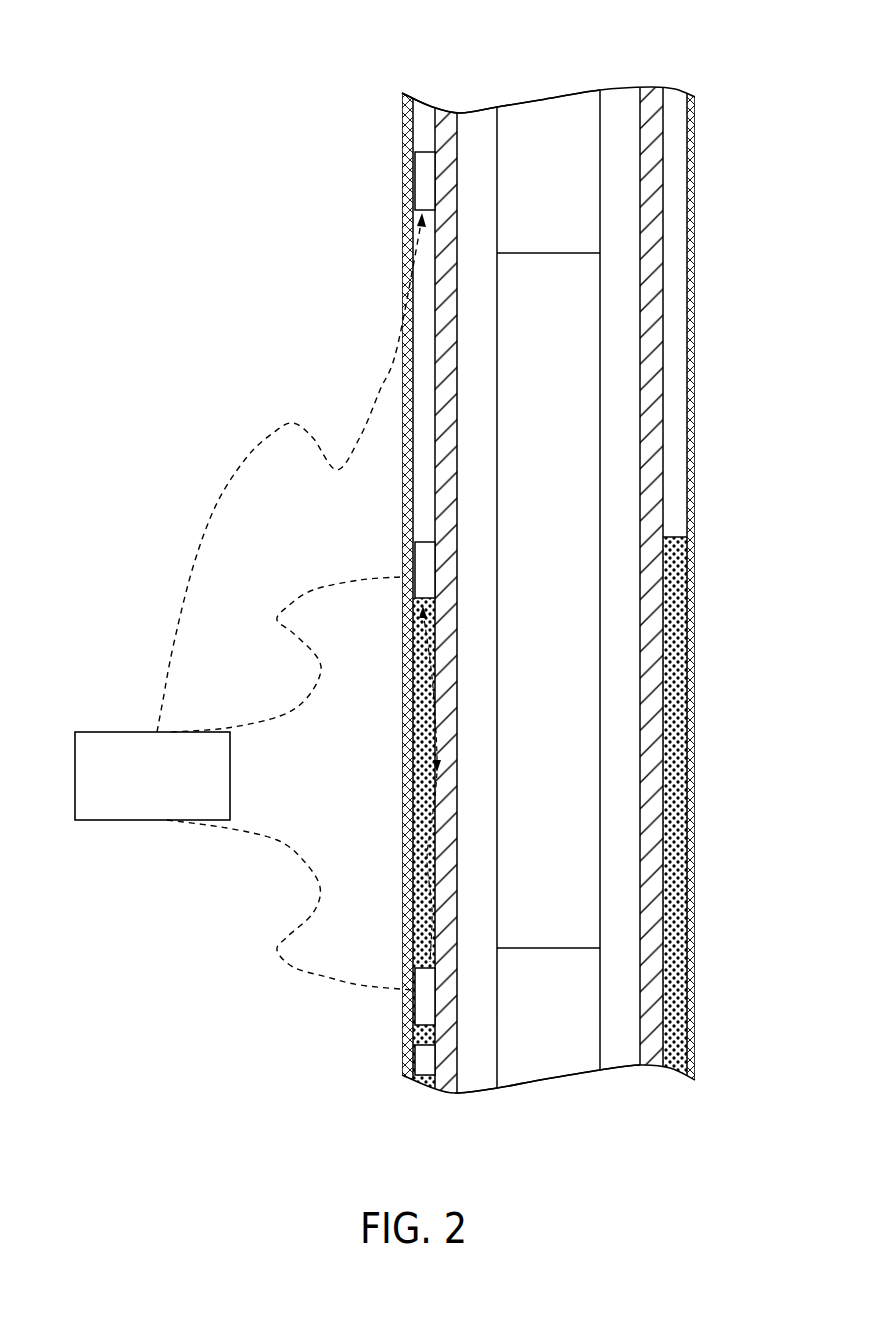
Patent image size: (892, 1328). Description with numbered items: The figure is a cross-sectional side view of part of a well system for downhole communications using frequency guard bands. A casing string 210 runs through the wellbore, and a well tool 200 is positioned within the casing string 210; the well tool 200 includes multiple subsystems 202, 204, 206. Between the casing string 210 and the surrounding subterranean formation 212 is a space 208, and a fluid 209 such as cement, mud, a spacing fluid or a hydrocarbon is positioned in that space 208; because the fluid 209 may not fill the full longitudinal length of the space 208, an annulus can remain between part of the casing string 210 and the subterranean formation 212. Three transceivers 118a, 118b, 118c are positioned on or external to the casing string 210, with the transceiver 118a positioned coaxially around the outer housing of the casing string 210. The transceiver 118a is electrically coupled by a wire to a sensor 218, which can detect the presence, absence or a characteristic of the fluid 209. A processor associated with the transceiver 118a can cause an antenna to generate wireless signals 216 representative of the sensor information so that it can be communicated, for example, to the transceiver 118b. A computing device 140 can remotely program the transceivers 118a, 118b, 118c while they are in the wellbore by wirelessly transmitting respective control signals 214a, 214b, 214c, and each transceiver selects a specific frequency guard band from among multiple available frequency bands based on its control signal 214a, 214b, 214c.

The well tool 200 is at (570, 90).
The subsystem 202 is at (520, 104).
The subsystem 204 is at (557, 1065).
The subsystem 206 is at (567, 686).
The space 208 is at (677, 323).
The fluid 209 is at (670, 735).
The casing string 210 is at (650, 421).
The subterranean formation 212 is at (696, 560).
The wireless signals 216 is at (403, 870).
The sensor 218 is at (425, 1060).
The transceiver 118a is at (428, 1000).
The transceiver 118b is at (425, 566).
The transceiver 118c is at (425, 182).
The computing device 140 is at (107, 730).
The control signal 214a is at (297, 857).
The control signal 214b is at (280, 718).
The control signal 214c is at (293, 423).